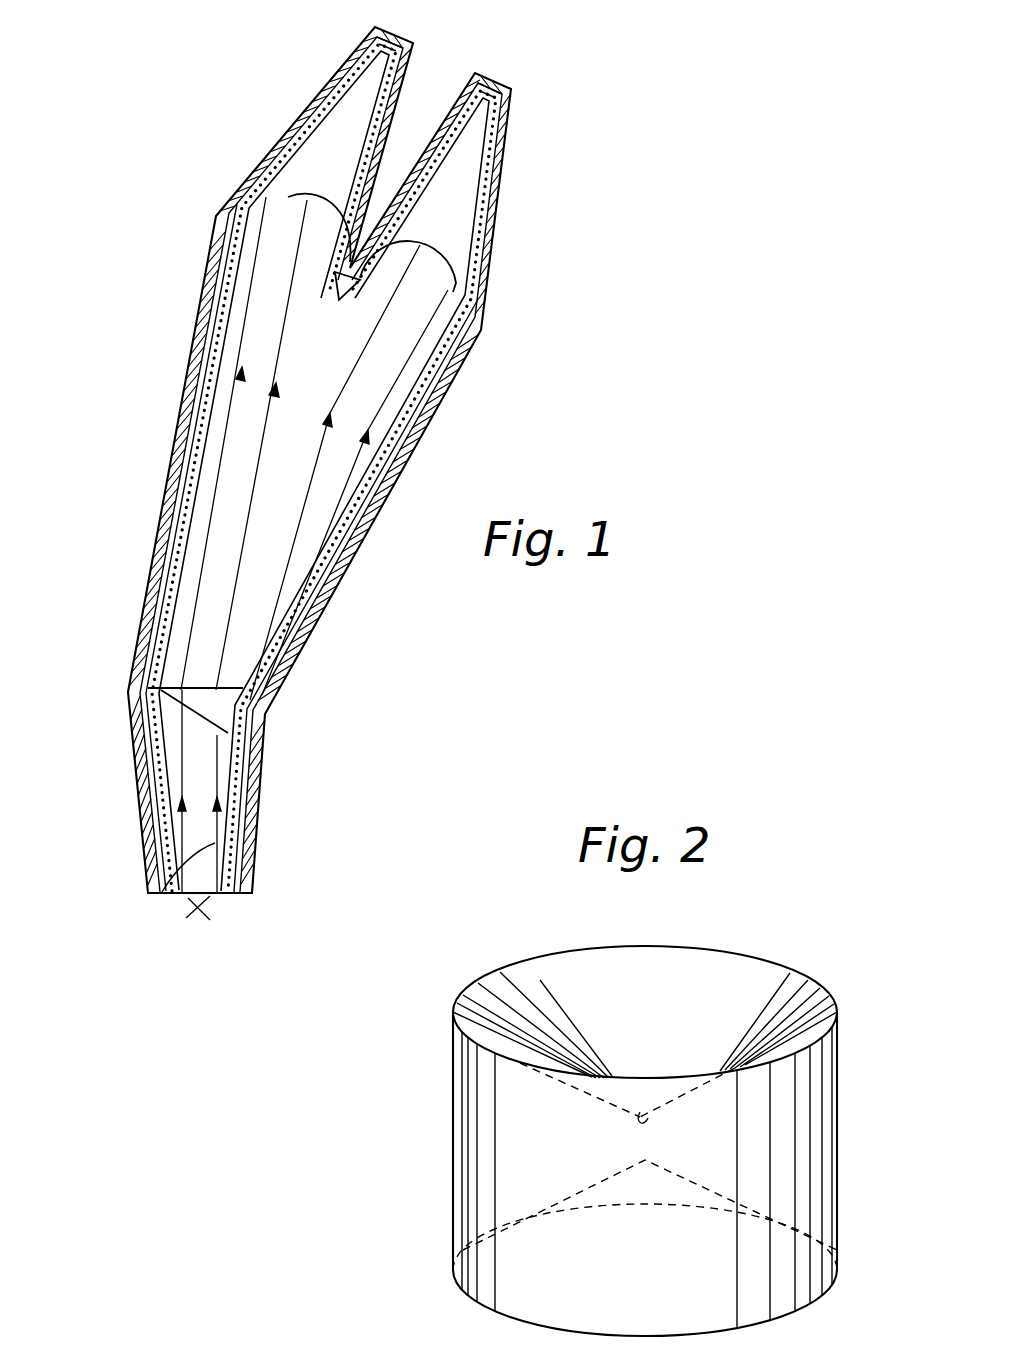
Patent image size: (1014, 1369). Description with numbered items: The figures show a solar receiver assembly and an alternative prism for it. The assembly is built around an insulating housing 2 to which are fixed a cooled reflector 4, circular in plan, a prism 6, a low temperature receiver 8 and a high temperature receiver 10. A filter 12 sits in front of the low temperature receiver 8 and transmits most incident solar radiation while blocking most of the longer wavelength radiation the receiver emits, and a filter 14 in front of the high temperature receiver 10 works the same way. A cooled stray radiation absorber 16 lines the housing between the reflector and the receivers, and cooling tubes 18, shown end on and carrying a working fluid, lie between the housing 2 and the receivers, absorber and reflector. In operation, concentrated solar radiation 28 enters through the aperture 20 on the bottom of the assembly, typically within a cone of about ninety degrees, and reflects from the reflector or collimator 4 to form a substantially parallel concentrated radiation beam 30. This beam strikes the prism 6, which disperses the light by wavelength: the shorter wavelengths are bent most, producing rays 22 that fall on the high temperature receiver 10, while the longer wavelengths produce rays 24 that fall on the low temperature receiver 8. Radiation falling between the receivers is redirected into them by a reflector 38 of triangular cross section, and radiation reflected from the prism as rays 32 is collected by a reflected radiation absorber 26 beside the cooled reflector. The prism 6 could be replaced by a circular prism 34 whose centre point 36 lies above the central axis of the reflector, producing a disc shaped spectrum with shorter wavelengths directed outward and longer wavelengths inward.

In FIG. 1, the insulating housing 2 is at (485, 282).
In FIG. 1, the cooled reflector 4 is at (243, 827).
In FIG. 1, the prism 6 is at (203, 690).
In FIG. 1, the low temperature receiver 8 is at (330, 158).
In FIG. 1, the high temperature receiver 10 is at (450, 188).
In FIG. 1, the filter 12 is at (280, 180).
In FIG. 1, the filter 14 is at (445, 245).
In FIG. 1, the cooled stray radiation absorber 16 is at (207, 443).
In FIG. 1, the cooling tubes 18 is at (413, 77).
In FIG. 1, the aperture 20 is at (235, 918).
In FIG. 1, the rays 22 is at (300, 477).
In FIG. 1, the rays 24 is at (282, 332).
In FIG. 1, the reflected radiation absorber 26 is at (177, 710).
In FIG. 1, the concentrated solar radiation 28 is at (195, 912).
In FIG. 1, the parallel concentrated radiation beam 30 is at (160, 870).
In FIG. 1, the rays 32 is at (177, 743).
In FIG. 2, the circular prism 34 is at (752, 950).
In FIG. 2, the centre point of the prism 36 is at (642, 1110).
In FIG. 1, the reflector 38 is at (360, 300).